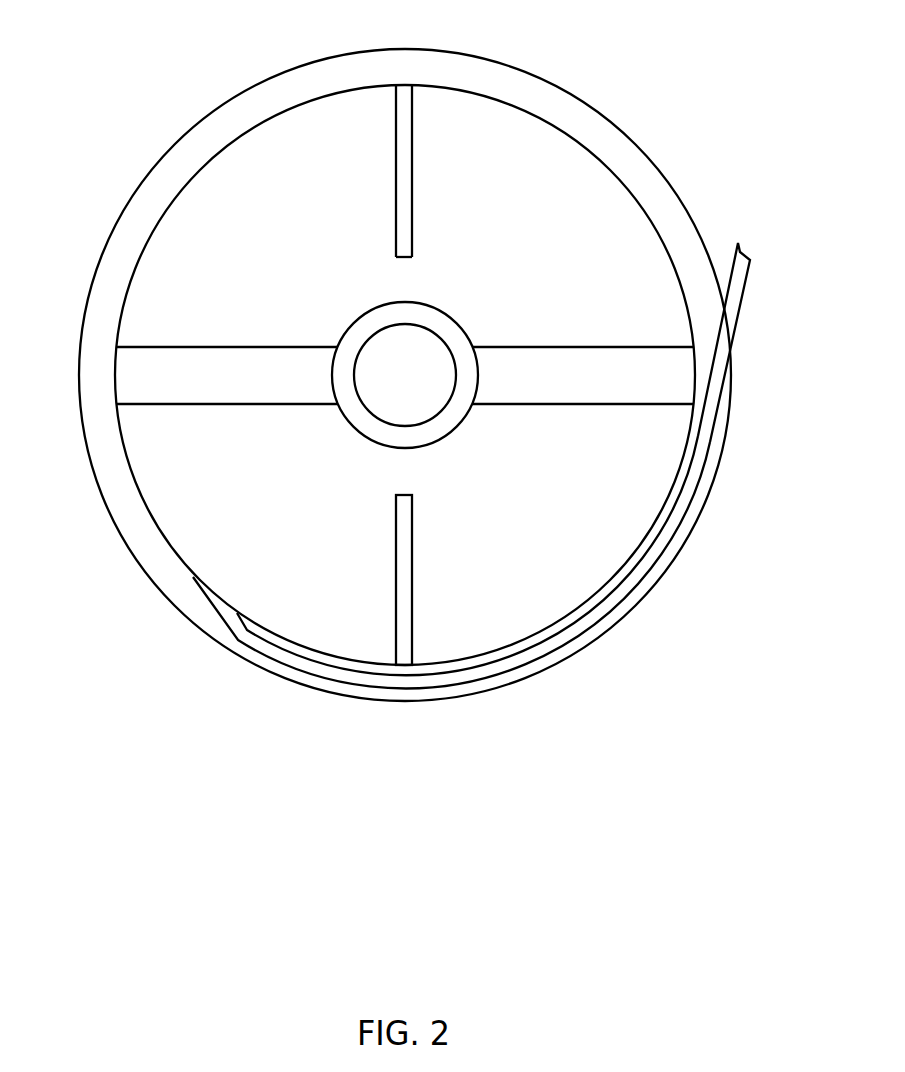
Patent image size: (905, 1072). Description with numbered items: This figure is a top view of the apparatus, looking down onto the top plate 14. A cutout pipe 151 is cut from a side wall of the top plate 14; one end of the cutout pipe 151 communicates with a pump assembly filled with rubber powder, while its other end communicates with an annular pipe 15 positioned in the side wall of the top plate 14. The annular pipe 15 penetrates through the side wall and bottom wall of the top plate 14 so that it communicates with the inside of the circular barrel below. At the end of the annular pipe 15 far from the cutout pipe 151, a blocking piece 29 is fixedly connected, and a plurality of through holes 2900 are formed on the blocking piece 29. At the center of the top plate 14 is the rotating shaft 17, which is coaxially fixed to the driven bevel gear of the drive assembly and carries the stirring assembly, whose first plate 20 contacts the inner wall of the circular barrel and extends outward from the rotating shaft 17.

The top plate 14 is at (560, 87).
The annular pipe 15 is at (508, 465).
The cutout pipe 151 is at (743, 290).
The rotating shaft 17 is at (382, 390).
The first plate 20 is at (187, 382).
The blocking piece 29 is at (477, 142).
The through holes 2900 is at (412, 225).